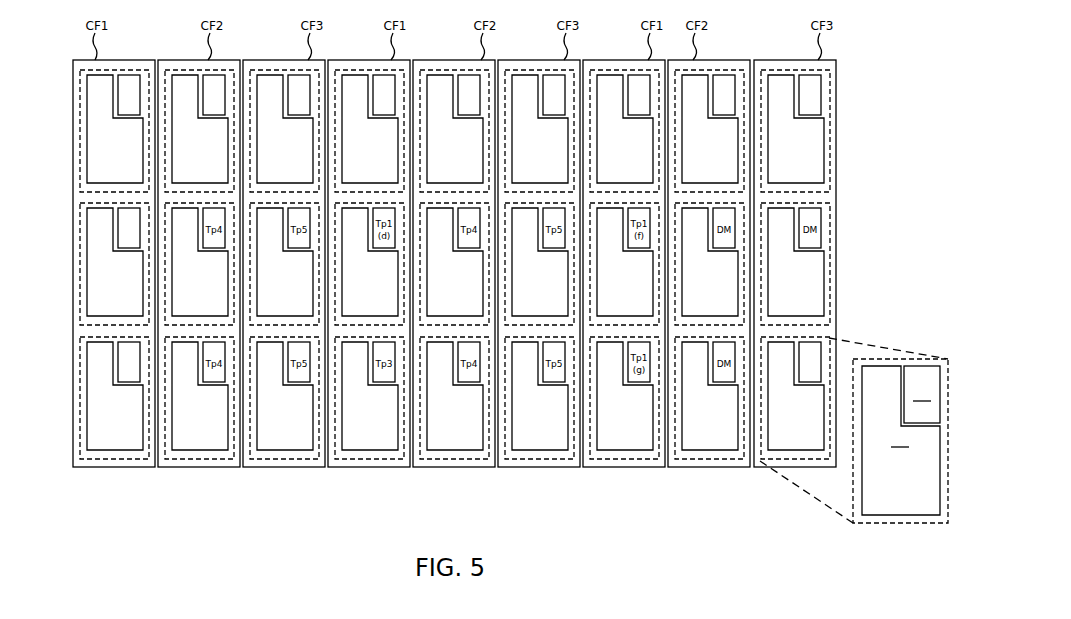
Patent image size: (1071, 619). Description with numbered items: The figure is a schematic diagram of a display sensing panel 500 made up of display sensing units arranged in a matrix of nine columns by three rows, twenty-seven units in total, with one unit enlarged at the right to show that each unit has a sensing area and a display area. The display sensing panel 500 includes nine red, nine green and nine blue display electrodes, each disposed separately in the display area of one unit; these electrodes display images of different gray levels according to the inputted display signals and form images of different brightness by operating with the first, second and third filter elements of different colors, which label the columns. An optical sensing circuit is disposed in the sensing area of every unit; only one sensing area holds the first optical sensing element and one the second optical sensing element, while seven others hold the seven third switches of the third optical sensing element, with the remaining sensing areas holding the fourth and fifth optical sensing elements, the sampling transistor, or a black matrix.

The display sensing panel 500 is at (36, 36).